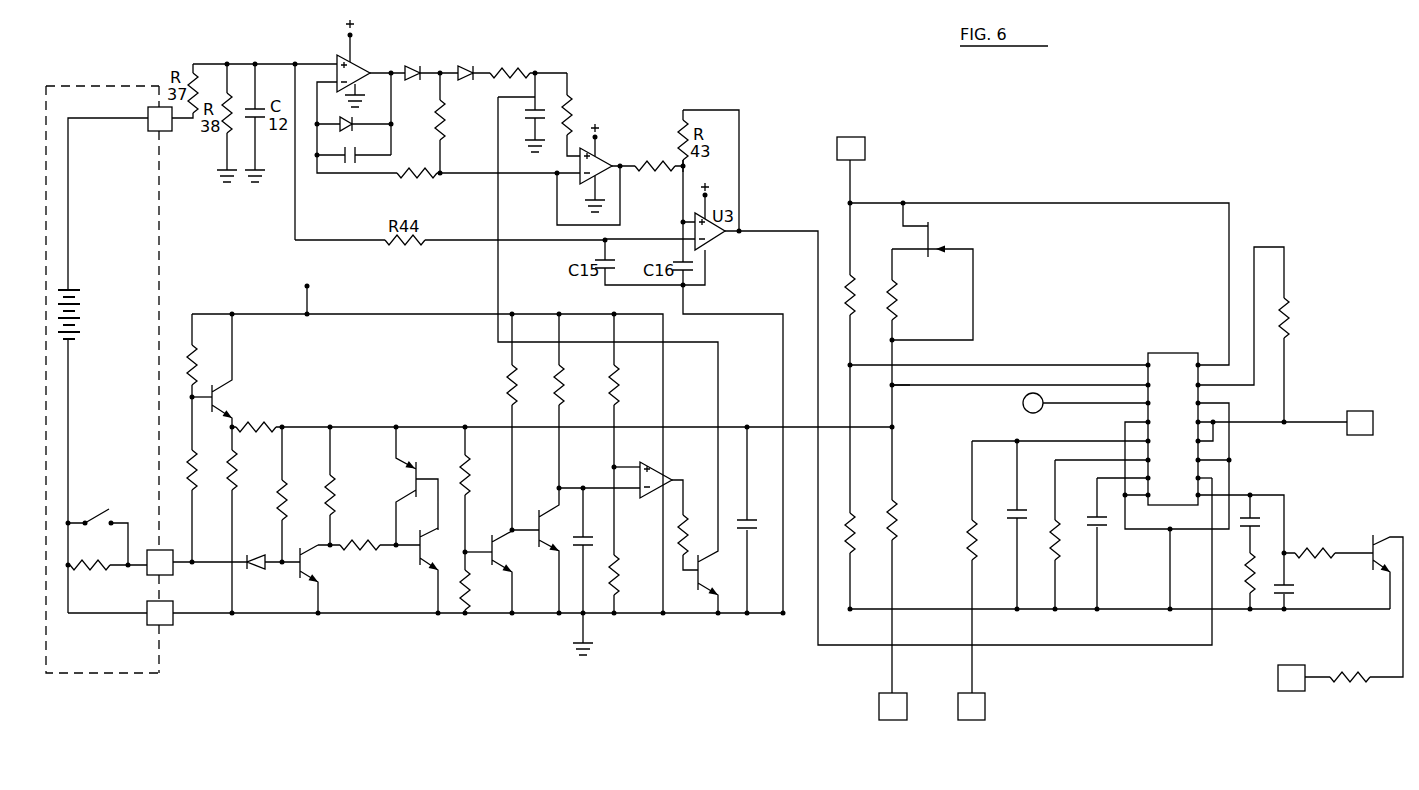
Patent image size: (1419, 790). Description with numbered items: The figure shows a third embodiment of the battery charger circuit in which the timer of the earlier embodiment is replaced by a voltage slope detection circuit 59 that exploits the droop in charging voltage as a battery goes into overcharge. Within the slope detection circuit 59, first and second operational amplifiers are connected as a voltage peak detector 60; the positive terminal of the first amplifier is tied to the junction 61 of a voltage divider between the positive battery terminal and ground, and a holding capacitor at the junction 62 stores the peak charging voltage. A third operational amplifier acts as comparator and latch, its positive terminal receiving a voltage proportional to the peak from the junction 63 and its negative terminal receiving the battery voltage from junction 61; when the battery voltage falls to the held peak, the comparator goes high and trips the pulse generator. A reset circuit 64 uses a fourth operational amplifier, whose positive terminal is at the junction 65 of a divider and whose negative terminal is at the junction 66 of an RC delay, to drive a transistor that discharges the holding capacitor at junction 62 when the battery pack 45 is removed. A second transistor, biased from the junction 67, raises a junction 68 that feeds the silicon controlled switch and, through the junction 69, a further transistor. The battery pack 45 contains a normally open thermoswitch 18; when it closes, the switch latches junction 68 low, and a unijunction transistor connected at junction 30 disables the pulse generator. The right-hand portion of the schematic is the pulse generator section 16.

The battery pack 45 is at (115, 86).
The thermoswitch 18 is at (108, 510).
The junction 61 is at (228, 63).
The voltage peak detector 60 is at (479, 164).
The junction 62 is at (541, 72).
The voltage slope detection circuit 59 is at (605, 110).
The junction 63 is at (690, 166).
The reset circuit 64 is at (345, 370).
The junction 67 is at (192, 397).
The junction 68 is at (330, 427).
The junction 69 is at (465, 552).
The junction 66 is at (559, 488).
The junction 65 is at (613, 467).
The control circuit 16 is at (950, 200).
The junction 30 is at (892, 386).